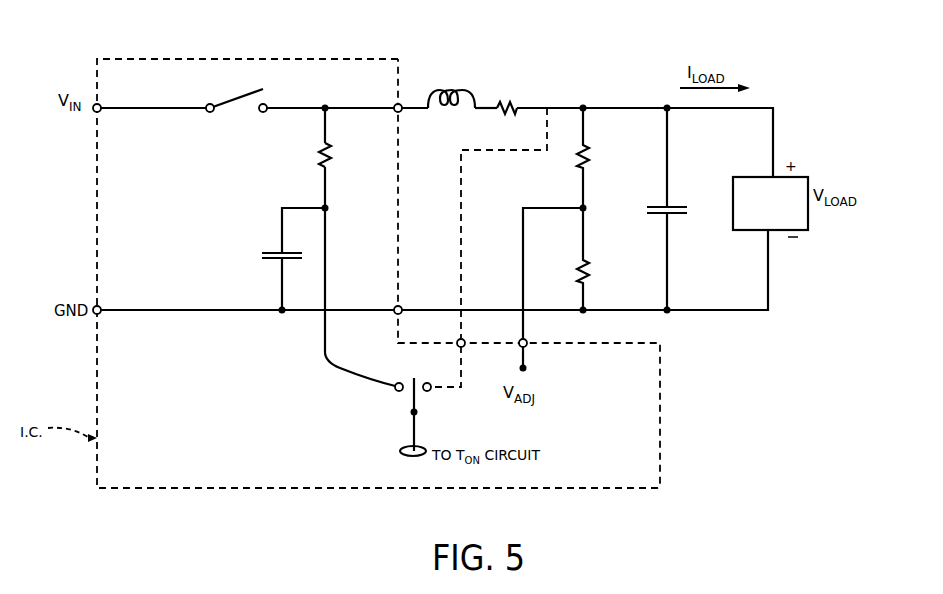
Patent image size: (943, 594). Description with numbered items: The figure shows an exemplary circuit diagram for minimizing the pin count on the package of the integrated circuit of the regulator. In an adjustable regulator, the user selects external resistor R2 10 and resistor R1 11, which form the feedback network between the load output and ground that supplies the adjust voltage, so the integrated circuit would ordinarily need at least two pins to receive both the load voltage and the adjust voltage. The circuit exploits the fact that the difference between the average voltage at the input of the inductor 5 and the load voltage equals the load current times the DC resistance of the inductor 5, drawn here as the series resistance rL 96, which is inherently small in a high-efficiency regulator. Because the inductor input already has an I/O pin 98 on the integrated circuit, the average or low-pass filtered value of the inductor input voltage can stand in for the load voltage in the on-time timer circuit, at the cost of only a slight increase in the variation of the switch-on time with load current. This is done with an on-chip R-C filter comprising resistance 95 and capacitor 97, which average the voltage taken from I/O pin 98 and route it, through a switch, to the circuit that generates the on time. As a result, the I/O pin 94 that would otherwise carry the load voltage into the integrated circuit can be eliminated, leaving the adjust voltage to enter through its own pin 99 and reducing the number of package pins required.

The inductor 5 is at (458, 60).
The inductor series resistance rL 96 is at (510, 60).
The I/O pin 98 is at (399, 97).
The resistance 95 is at (320, 152).
The capacitor 97 is at (262, 250).
The resistor R1 11 is at (585, 152).
The resistor R2 10 is at (585, 263).
The I/O pin 94 is at (458, 340).
The adjust terminal 99 is at (527, 340).